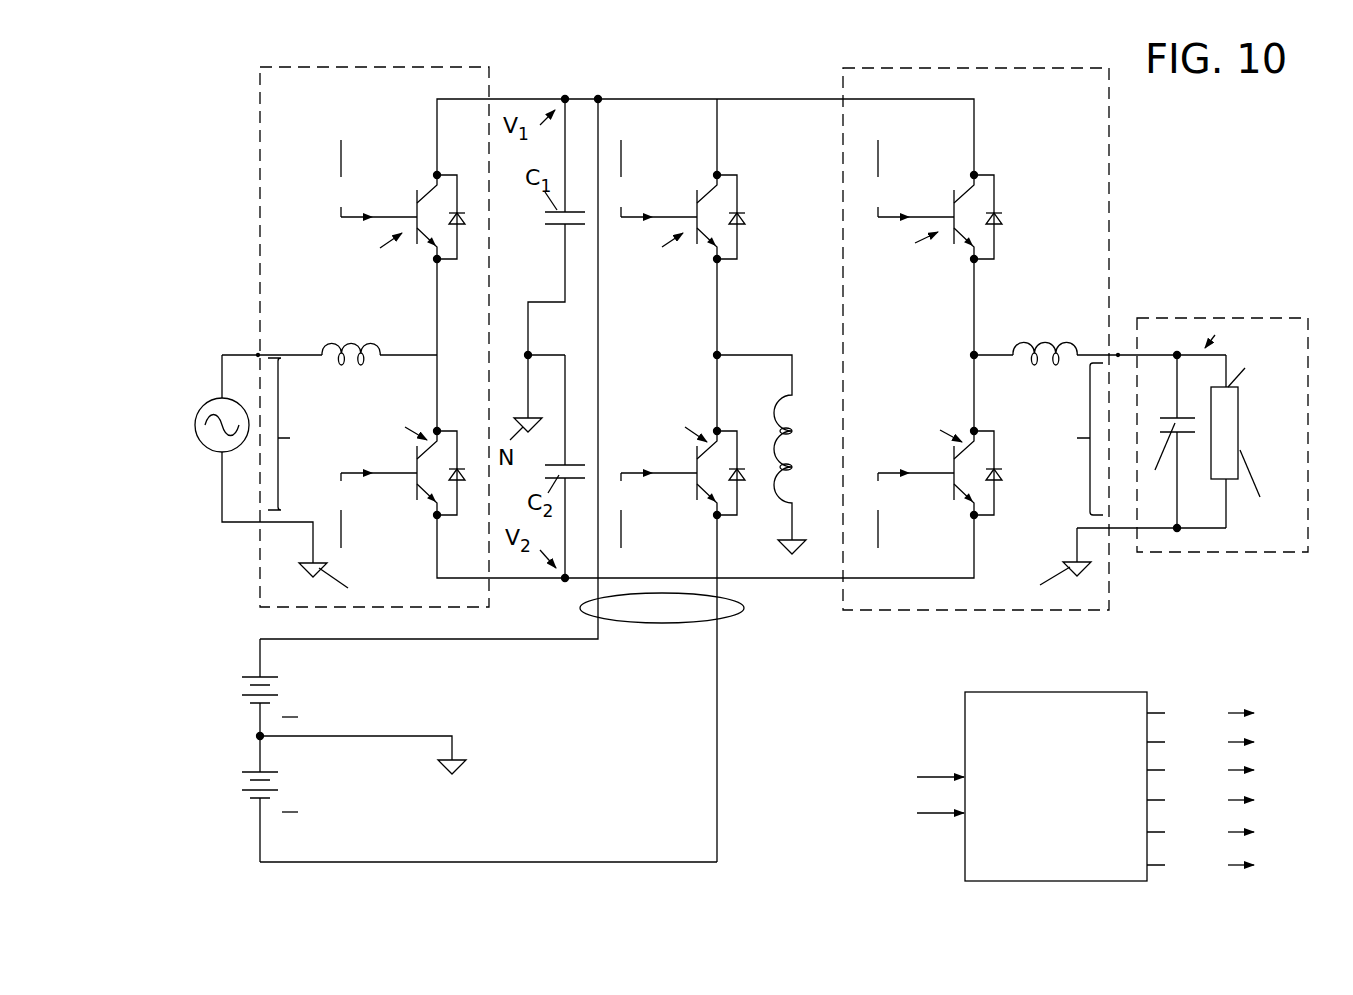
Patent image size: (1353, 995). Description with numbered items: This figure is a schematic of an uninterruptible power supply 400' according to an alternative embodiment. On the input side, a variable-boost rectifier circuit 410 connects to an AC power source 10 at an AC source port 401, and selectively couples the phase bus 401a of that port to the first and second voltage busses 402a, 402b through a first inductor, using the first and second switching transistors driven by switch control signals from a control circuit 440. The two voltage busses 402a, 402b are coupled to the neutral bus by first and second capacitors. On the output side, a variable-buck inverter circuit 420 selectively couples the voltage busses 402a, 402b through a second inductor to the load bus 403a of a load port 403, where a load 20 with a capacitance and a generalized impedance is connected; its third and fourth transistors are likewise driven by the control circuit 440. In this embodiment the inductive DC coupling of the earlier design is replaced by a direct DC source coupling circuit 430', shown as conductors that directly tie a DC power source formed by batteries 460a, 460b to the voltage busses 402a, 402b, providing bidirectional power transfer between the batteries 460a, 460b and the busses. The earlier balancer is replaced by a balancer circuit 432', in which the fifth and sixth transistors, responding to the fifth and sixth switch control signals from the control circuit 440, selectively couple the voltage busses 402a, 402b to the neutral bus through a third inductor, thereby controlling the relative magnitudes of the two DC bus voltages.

The AC power source 10 is at (201, 450).
The load 20 is at (1272, 318).
The UPS 400' is at (1265, 181).
The AC source port 401 is at (301, 434).
The phase bus 401a is at (257, 353).
The first voltage bus 402a is at (562, 97).
The second voltage bus 402b is at (563, 583).
The load port 403 is at (1065, 439).
The load bus 403a is at (1118, 357).
The variable-boost rectifier circuit 410 is at (257, 183).
The variable-buck inverter circuit 420 is at (1110, 190).
The direct DC source coupling circuit 430' is at (680, 627).
The balancer circuit 432' is at (698, 332).
The control circuit 440 is at (1107, 677).
The battery 460a is at (257, 697).
The battery 460b is at (257, 790).